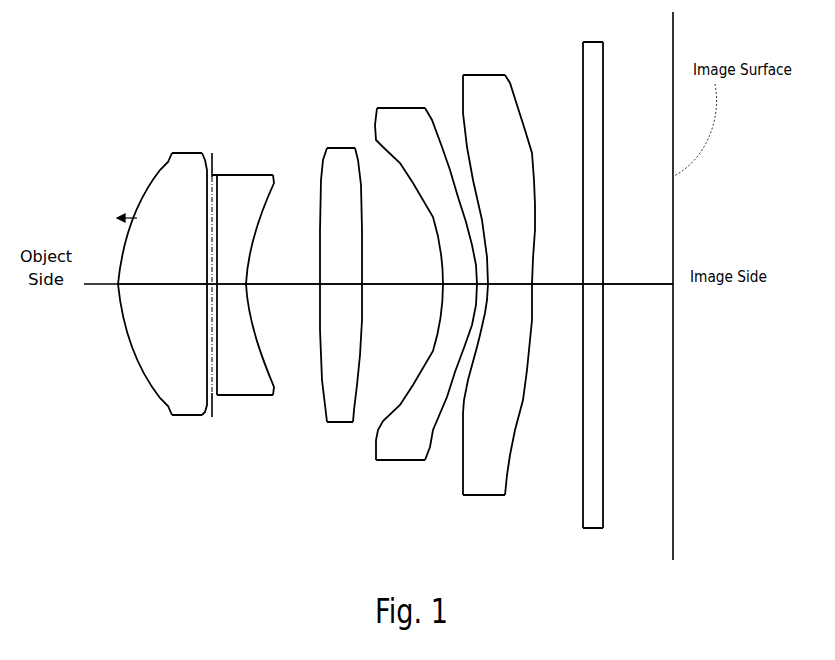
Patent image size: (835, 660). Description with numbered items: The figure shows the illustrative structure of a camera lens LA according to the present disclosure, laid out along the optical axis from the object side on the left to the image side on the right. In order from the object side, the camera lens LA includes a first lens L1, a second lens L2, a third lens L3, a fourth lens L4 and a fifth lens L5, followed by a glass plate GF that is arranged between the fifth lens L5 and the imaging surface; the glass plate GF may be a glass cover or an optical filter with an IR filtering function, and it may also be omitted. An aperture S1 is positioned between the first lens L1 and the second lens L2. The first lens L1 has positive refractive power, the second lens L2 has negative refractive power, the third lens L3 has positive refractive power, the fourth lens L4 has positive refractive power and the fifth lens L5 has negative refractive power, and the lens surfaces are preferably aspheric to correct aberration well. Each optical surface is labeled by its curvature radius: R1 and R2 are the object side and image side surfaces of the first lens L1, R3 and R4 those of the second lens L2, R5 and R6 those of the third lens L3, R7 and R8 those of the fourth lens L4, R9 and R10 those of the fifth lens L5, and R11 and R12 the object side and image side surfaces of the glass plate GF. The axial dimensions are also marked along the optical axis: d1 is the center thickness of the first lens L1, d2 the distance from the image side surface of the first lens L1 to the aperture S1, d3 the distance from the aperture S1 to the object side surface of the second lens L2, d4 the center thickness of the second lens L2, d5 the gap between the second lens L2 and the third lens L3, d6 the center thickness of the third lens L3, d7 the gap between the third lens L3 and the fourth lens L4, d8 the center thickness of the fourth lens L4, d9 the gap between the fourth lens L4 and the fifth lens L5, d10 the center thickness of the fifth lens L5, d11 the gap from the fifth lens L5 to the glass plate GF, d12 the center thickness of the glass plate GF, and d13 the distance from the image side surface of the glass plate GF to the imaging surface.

The camera lens LA is at (145, 114).
The first lens L1 is at (143, 284).
The second lens L2 is at (236, 311).
The third lens L3 is at (313, 297).
The fourth lens L4 is at (404, 312).
The fifth lens L5 is at (476, 308).
The glass plate GF is at (592, 117).
The aperture S1 is at (211, 152).
The curvature radius of the first lens L1's object side surface R1 is at (117, 299).
The curvature radius of the first lens L1's image side surface R2 is at (204, 300).
The curvature radius of the second lens L2's object side surface R3 is at (207, 396).
The curvature radius of the second lens L2's image side surface R4 is at (245, 335).
The curvature radius of the third lens L3's object side surface R5 is at (320, 309).
The curvature radius of the third lens L3's image side surface R6 is at (361, 318).
The curvature radius of the fourth lens L4's object side surface R7 is at (437, 310).
The curvature radius of the fourth lens L4's image side surface R8 is at (472, 325).
The curvature radius of the fifth lens L5's object side surface R9 is at (484, 337).
The curvature radius of the fifth lens L5's image side surface R10 is at (531, 340).
The curvature radius of the glass plate GF's object side surface R11 is at (583, 432).
The curvature radius of the glass plate GF's image side surface R12 is at (603, 432).
The center thickness of the first lens L1 d1 is at (162, 277).
The axial distance from the image side surface of the first lens L1 to aperture S1 d2 is at (207, 287).
The axial distance from aperture S1 to the object side surface of the second lens L2 d3 is at (217, 285).
The center thickness of the second lens L2 d4 is at (231, 278).
The axial distance from the image side surface of the second lens L2 to the object s d5 is at (283, 278).
The center thickness of the third lens L3 d6 is at (341, 278).
The axial distance from the image side surface of the third lens L3 to the object si d7 is at (402, 278).
The center thickness of the fourth lens L4 d8 is at (460, 278).
The axial distance from the image side surface of the fourth lens L4 to the object s d9 is at (485, 283).
The center thickness of the fifth lens L5 d10 is at (510, 278).
The axial distance from the image side surface of the fifth lens L5 to the object si d11 is at (557, 278).
The center thickness of the glass plate GF d12 is at (590, 282).
The axial distance from the image side surface to the imaging surface of the glass p d13 is at (638, 278).